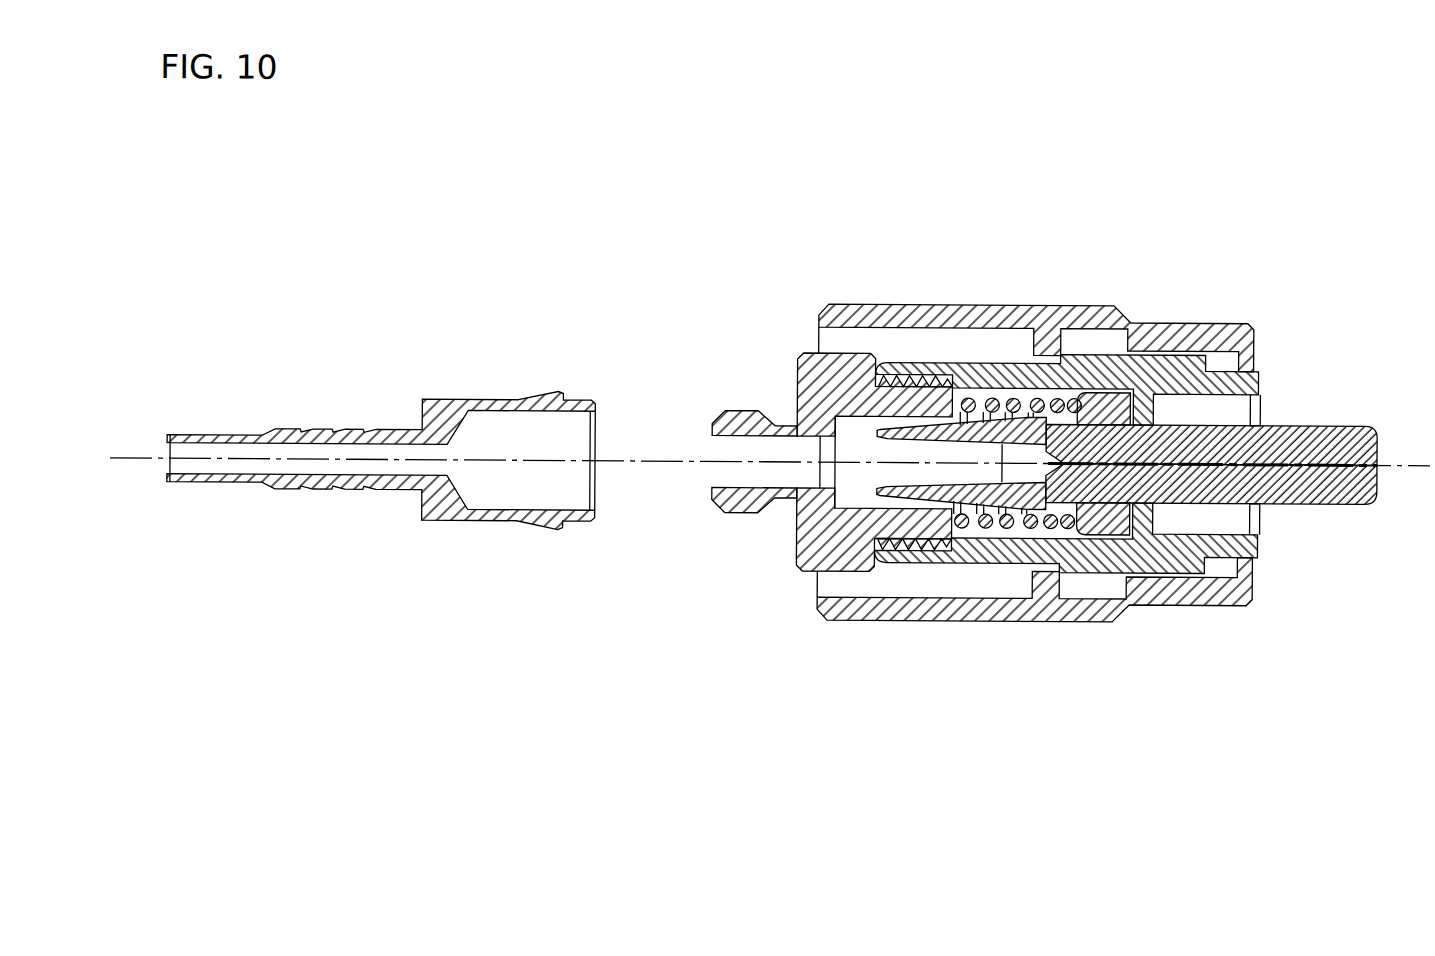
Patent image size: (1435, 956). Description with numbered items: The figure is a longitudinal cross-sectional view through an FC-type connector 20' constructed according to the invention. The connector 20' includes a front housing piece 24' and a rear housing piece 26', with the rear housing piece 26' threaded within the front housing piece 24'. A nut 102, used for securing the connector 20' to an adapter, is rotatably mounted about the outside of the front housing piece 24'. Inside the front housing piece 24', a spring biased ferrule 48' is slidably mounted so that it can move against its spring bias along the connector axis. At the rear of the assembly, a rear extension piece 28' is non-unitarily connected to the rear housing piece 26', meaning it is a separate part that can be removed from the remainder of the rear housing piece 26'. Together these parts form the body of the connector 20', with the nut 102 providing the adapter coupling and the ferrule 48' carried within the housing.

The FC-type connector 20' is at (1047, 502).
The front housing piece 24' is at (1067, 400).
The rear housing piece 26' is at (832, 423).
The rear extension piece 28' is at (380, 498).
The spring biased ferrule 48' is at (1215, 419).
The nut 102 is at (1077, 626).